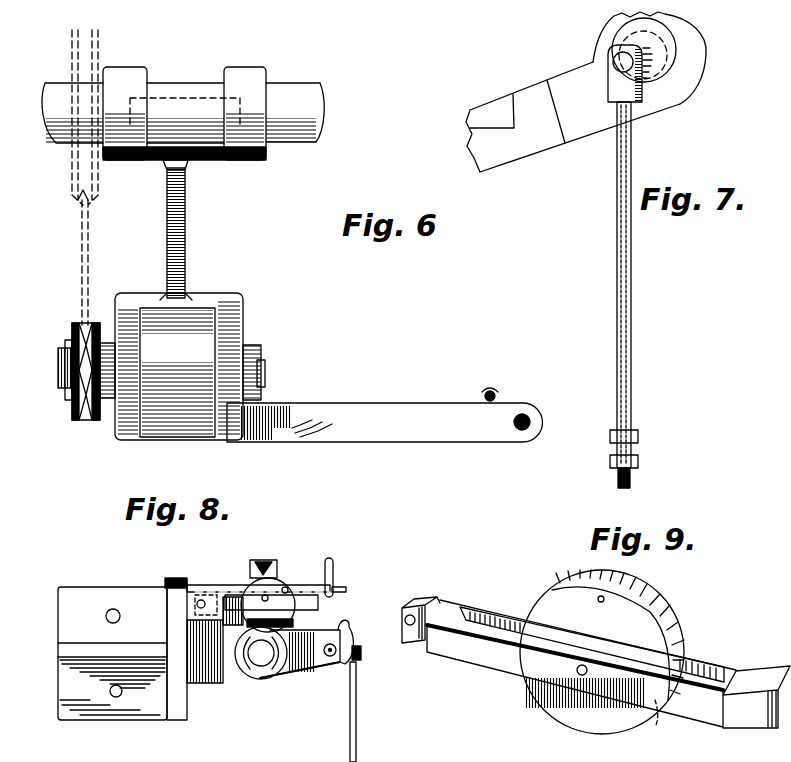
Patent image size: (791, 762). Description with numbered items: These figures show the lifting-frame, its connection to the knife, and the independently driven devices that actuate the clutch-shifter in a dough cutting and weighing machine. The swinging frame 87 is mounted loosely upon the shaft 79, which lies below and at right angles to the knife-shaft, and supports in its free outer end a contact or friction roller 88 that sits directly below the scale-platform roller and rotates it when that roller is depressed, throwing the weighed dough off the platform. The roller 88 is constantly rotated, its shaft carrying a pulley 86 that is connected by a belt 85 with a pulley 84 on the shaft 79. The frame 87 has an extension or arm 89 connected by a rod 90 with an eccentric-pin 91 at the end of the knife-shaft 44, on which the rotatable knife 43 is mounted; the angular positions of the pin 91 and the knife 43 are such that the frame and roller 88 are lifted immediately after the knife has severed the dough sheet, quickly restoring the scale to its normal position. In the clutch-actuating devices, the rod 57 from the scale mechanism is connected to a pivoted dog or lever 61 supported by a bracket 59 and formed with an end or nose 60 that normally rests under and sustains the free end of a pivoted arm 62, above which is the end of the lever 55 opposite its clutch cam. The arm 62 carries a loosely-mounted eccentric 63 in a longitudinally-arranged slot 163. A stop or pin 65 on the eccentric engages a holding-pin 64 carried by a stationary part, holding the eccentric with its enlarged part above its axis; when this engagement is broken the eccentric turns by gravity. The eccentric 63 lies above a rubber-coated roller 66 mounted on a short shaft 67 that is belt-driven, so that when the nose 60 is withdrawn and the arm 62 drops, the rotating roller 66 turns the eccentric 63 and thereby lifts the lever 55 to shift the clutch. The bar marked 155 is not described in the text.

In FIG. 6, the shaft 79 is at (56, 142).
In FIG. 6, the pulley 84 is at (70, 67).
In FIG. 6, the belt 85 is at (80, 268).
In FIG. 6, the pulley 86 is at (81, 421).
In FIG. 6, the swinging frame 87 is at (167, 251).
In FIG. 6, the contact or friction roller 88 is at (182, 366).
In FIG. 6, the extension or arm 89 is at (385, 422).
In FIG. 6, the rod 90 is at (517, 442).
In FIG. 7, the rod 90 is at (617, 327).
In FIG. 7, the eccentric-pin 91 is at (614, 62).
In FIG. 7, the shaft 44 is at (664, 62).
In FIG. 7, the knife 43 is at (545, 150).
In FIG. 8, the bar 155 is at (220, 566).
In FIG. 8, the holding-pin 64 is at (268, 560).
In FIG. 8, the eccentric 63 is at (268, 582).
In FIG. 9, the eccentric 63 is at (602, 652).
In FIG. 8, the stop or pin 65 is at (276, 597).
In FIG. 9, the stop or pin 65 is at (598, 601).
In FIG. 8, the lever 55 is at (333, 568).
In FIG. 8, the end or nose 60 is at (348, 626).
In FIG. 8, the pivoted arm 62 is at (286, 634).
In FIG. 9, the pivoted arm 62 is at (705, 713).
In FIG. 8, the pivoted dog or lever 61 is at (340, 664).
In FIG. 8, the short shaft 67 is at (233, 683).
In FIG. 8, the roller 66 is at (265, 673).
In FIG. 8, the bracket 59 is at (298, 677).
In FIG. 8, the rod 57 is at (372, 712).
In FIG. 9, the longitudinally-arranged slot 163 is at (493, 617).